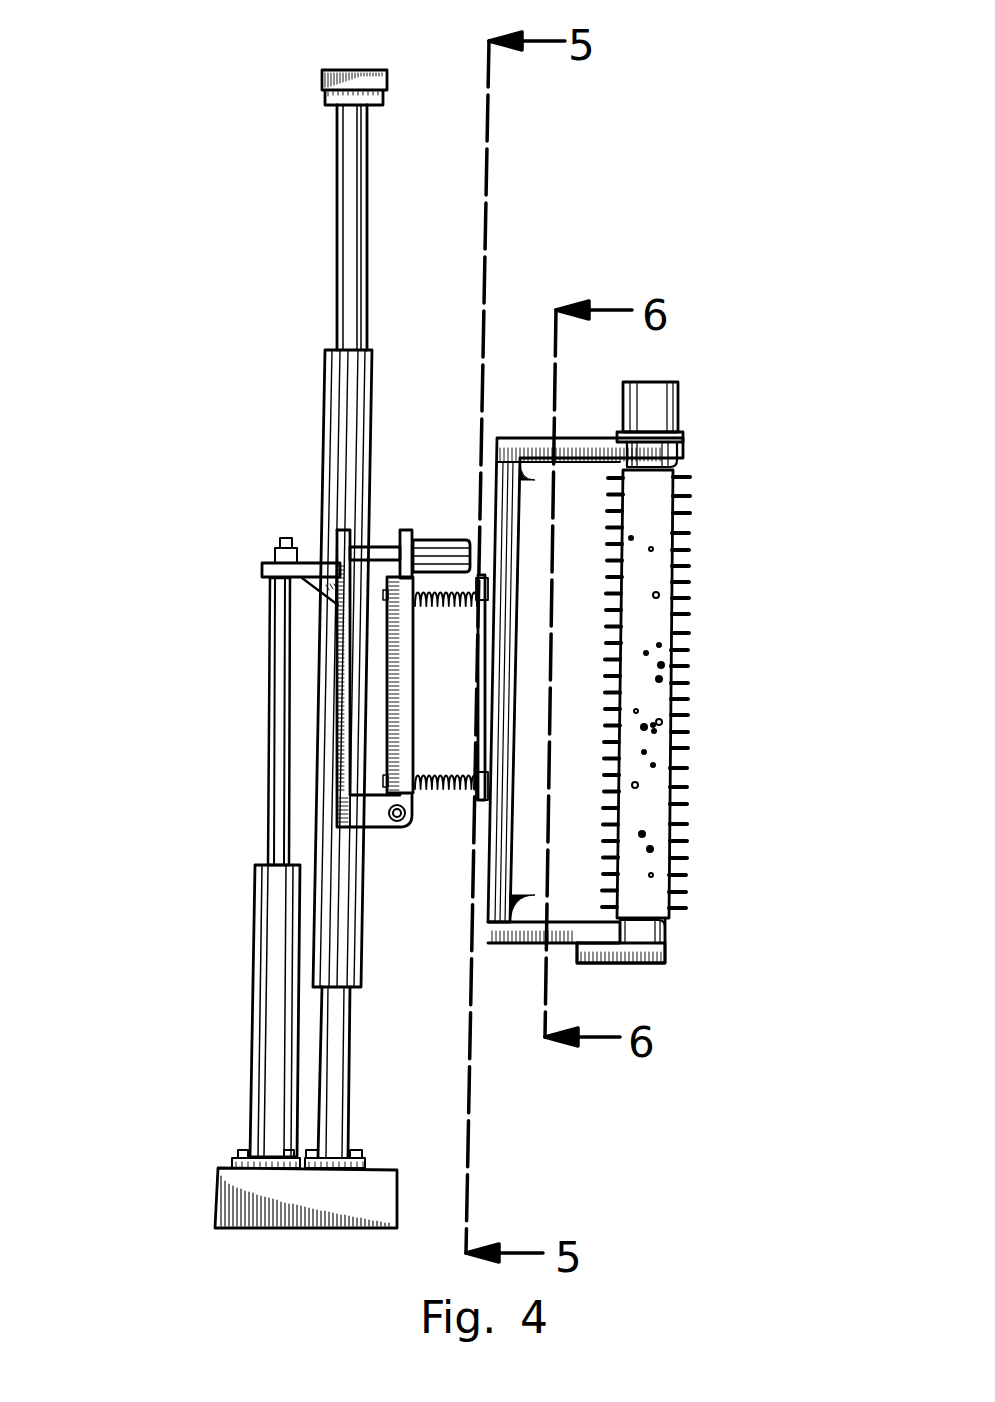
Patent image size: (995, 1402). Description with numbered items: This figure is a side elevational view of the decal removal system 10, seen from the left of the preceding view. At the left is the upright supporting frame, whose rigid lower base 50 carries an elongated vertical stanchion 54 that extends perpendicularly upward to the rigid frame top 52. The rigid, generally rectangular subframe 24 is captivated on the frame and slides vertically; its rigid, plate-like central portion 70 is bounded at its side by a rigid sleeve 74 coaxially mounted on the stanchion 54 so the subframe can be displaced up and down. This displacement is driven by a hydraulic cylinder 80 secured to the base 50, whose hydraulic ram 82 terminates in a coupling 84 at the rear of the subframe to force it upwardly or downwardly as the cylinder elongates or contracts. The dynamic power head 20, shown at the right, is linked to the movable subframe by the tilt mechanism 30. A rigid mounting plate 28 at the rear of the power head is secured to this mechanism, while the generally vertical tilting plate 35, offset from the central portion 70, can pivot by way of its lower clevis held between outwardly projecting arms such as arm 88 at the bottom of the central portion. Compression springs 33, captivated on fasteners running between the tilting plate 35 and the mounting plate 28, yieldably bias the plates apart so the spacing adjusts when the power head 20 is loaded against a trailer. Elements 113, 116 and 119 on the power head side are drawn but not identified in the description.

The decal removal system 10 is at (243, 140).
The power head 20 is at (746, 360).
The subframe 24 is at (316, 438).
The mounting plate 28 is at (484, 696).
The tilt mechanism 30 is at (405, 488).
The compression springs 33 is at (432, 615).
The tilting plate 35 is at (413, 752).
The lower base 50 is at (232, 1190).
The frame top 52 is at (340, 70).
The stanchion 54 is at (338, 265).
The central portion 70 is at (340, 530).
The sleeve 74 is at (318, 398).
The hydraulic cylinder 80 is at (252, 1040).
The hydraulic ram 82 is at (270, 745).
The coupling 84 is at (258, 556).
The arm 88 is at (380, 823).
The lower support 113 is at (665, 945).
The panel 116 is at (660, 612).
The upper support 119 is at (685, 417).